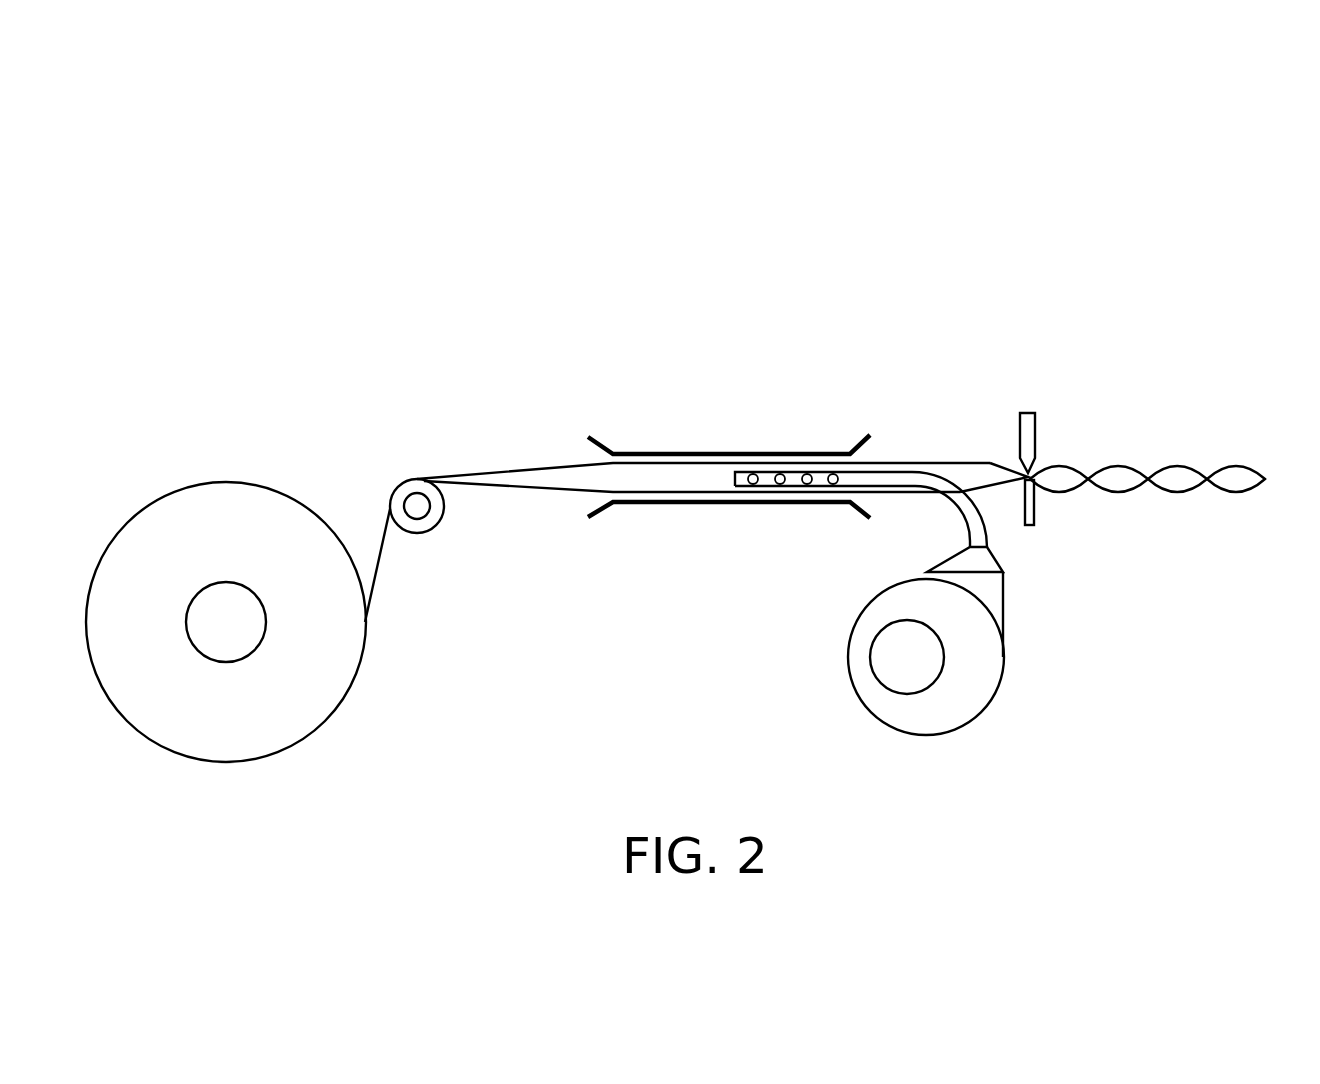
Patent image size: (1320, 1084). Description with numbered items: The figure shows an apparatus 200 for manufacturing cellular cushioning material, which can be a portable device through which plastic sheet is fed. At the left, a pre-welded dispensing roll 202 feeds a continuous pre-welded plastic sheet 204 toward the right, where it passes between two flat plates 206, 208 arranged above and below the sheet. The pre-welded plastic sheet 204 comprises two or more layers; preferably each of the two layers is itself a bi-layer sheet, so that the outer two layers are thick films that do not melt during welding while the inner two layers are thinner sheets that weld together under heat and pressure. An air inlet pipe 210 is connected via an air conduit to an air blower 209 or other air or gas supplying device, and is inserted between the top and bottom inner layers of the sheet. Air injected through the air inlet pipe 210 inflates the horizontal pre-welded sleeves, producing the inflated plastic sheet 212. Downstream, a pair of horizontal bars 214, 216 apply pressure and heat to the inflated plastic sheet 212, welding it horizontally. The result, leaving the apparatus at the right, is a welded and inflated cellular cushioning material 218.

The apparatus 200 is at (780, 240).
The pre-welded dispensing roll 202 is at (224, 517).
The pre-welded plastic sheet 204 is at (545, 478).
The flat plate 206 is at (602, 443).
The flat plate 208 is at (603, 510).
The air blower 209 is at (973, 692).
The air inlet pipe 210 is at (855, 478).
The inflated plastic sheet 212 is at (990, 480).
The horizontal bar 214 is at (1027, 423).
The horizontal bar 216 is at (1030, 525).
The cellular cushioning material 218 is at (1232, 478).